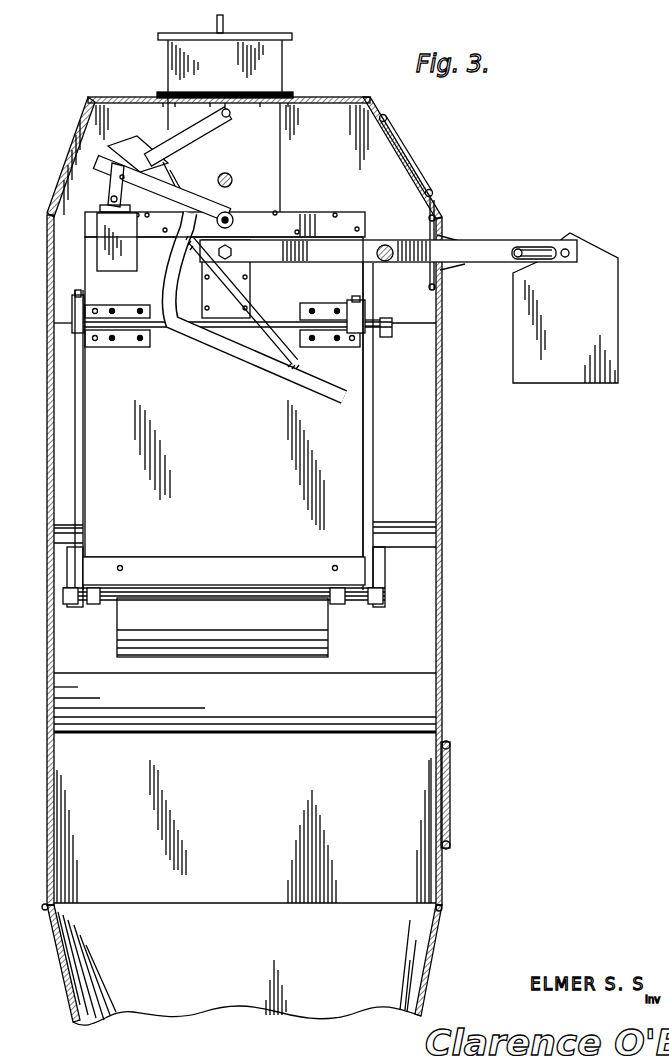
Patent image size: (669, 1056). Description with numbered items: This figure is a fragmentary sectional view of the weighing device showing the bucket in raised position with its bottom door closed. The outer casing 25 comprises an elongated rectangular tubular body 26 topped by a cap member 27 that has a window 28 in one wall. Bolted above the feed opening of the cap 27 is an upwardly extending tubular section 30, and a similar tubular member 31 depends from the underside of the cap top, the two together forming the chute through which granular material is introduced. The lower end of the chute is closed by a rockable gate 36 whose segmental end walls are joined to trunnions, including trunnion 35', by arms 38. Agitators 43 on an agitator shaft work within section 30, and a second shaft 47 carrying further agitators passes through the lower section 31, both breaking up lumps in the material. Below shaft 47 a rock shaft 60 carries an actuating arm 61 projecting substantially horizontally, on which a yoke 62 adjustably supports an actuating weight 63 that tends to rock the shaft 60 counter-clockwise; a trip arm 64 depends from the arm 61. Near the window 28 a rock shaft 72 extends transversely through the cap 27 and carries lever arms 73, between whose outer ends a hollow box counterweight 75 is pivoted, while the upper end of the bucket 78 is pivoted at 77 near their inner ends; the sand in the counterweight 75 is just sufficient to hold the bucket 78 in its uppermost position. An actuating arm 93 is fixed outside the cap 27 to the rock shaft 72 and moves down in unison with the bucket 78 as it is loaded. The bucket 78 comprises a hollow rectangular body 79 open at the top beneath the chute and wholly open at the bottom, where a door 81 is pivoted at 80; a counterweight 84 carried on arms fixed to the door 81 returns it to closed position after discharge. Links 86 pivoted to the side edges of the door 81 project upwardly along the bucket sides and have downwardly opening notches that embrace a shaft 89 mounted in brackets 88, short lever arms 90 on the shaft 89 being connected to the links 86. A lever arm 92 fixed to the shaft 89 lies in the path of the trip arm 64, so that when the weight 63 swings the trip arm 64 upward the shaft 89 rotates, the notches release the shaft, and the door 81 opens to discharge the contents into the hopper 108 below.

The outer casing 25 is at (447, 488).
The tubular body 26 is at (48, 597).
The cap member 27 is at (78, 135).
The window 28 is at (402, 140).
The upwardly extending tubular section 30 is at (270, 62).
The tubular member 31 is at (267, 173).
The trunnion 35' is at (247, 120).
The gate 36 is at (138, 140).
The arm 38 is at (208, 127).
The agitator 43 is at (225, 25).
The shaft 47 is at (229, 176).
The rock shaft 60 is at (233, 211).
The actuating arm 61 is at (167, 190).
The yoke 62 is at (113, 187).
The actuating weight 63 is at (108, 268).
The trip arm 64 is at (240, 353).
The rock shaft 72 is at (385, 245).
The lever arm 73 is at (335, 255).
The counterweight 75 is at (607, 333).
The pivot 77 is at (232, 252).
The bucket 78 is at (347, 498).
The hollow rectangular body 79 is at (97, 478).
The pivot 80 is at (107, 603).
The door 81 is at (210, 583).
The counterweight 84 is at (315, 638).
The link 86 is at (77, 440).
The bracket 88 is at (98, 350).
The shaft 89 is at (280, 322).
The lever arm 90 is at (373, 317).
The lever arm 92 is at (392, 333).
The actuating arm 93 is at (530, 248).
The hopper 108 is at (180, 1007).